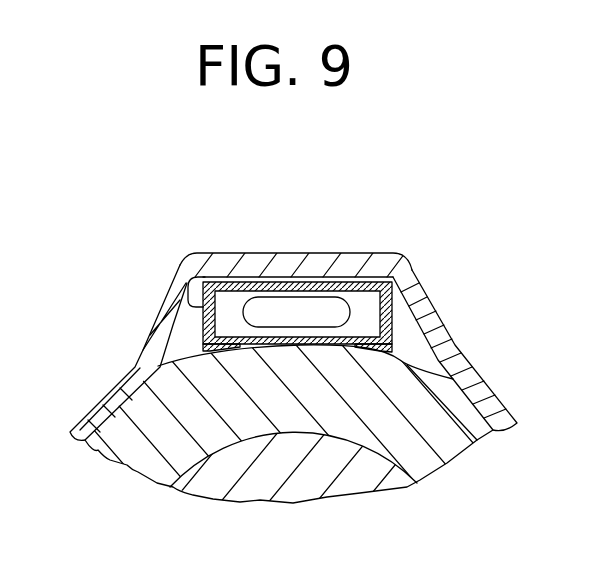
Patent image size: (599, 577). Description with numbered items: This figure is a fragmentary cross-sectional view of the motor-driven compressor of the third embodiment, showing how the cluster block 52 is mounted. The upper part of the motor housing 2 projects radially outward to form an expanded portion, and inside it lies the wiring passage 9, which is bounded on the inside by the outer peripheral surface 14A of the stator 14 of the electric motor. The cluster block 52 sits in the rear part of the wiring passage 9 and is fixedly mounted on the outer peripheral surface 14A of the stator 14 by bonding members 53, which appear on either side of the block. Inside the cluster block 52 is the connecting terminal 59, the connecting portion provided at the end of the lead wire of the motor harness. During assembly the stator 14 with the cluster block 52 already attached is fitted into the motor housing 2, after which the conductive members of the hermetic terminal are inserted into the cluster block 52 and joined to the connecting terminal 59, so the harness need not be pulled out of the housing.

The motor housing 2 is at (398, 252).
The wiring passage 9 is at (405, 325).
The stator 14 is at (296, 434).
The outer peripheral surface of the stator 14A is at (155, 367).
The cluster block 52 is at (193, 255).
The bonding members 53 is at (437, 357).
The connecting terminal 59 is at (238, 282).